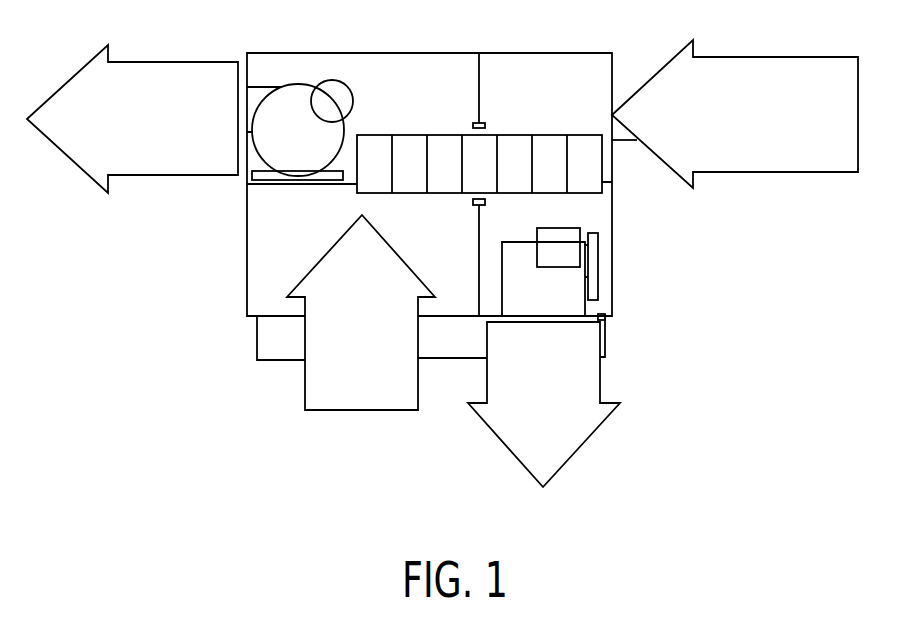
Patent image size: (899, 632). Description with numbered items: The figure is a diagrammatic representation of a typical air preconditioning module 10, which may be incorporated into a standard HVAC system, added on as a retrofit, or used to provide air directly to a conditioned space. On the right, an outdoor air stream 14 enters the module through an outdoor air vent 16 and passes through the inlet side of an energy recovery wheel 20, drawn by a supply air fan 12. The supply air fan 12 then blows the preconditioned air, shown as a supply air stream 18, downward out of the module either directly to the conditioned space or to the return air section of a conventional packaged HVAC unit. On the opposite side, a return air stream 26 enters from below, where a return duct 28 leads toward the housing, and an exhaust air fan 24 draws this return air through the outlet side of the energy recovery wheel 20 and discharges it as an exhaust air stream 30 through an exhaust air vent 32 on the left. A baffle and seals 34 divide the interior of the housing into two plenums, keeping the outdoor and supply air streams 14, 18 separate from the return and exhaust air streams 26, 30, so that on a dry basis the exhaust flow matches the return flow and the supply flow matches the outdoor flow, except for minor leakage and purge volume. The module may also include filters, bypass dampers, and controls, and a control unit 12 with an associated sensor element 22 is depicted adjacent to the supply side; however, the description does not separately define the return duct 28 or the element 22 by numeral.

The air preconditioning module 10 is at (266, 490).
The supply air fan 12 is at (587, 308).
The outdoor air stream 14 is at (768, 73).
The outdoor air vent 16 is at (625, 80).
The supply air stream 18 is at (577, 433).
The energy recovery wheel 20 is at (520, 145).
The sensor 22 is at (603, 318).
The exhaust air fan 24 is at (307, 100).
The return air stream 26 is at (313, 397).
The return air duct 28 is at (265, 342).
The exhaust air stream 30 is at (152, 75).
The exhaust air vent 32 is at (257, 95).
The baffle and seals 34 is at (480, 73).